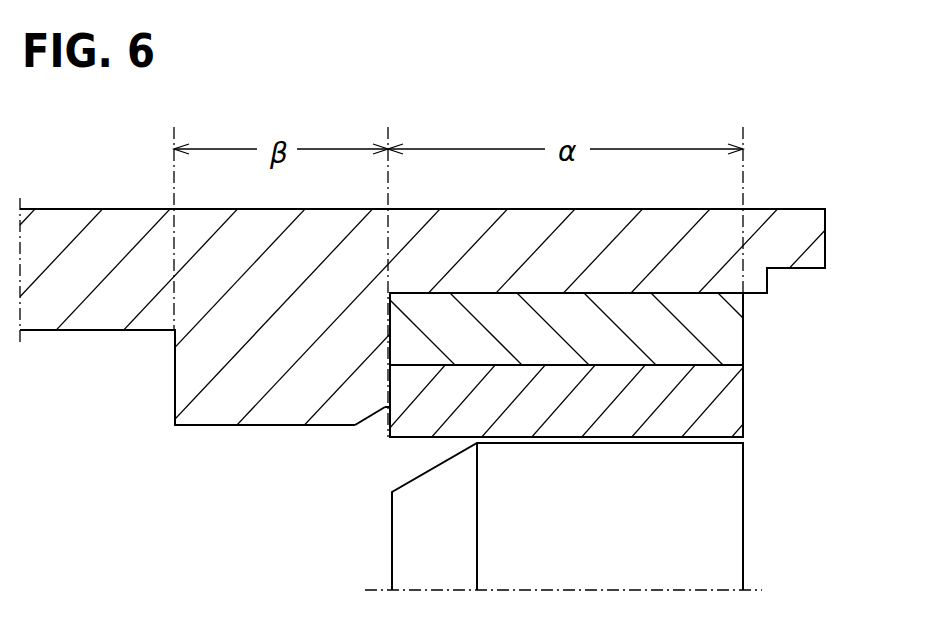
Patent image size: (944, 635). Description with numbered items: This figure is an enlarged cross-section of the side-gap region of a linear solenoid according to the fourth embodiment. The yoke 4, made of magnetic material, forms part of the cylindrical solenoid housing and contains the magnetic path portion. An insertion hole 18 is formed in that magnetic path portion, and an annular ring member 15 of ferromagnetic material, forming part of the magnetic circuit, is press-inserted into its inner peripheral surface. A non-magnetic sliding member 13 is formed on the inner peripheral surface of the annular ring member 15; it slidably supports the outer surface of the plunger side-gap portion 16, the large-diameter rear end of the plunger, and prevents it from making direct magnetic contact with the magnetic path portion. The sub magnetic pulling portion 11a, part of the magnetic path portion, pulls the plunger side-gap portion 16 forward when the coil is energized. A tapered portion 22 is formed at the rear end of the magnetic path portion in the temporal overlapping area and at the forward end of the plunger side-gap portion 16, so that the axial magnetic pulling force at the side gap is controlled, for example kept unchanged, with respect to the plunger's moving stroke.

The yoke 4 is at (88, 228).
The insertion hole 18 is at (679, 296).
The annular ring member 15 is at (722, 337).
The sliding member 13 is at (728, 405).
The plunger side-gap portion 16 is at (705, 541).
The tapered portion 22 is at (378, 410).
The sub magnetic pulling portion 11a is at (373, 450).